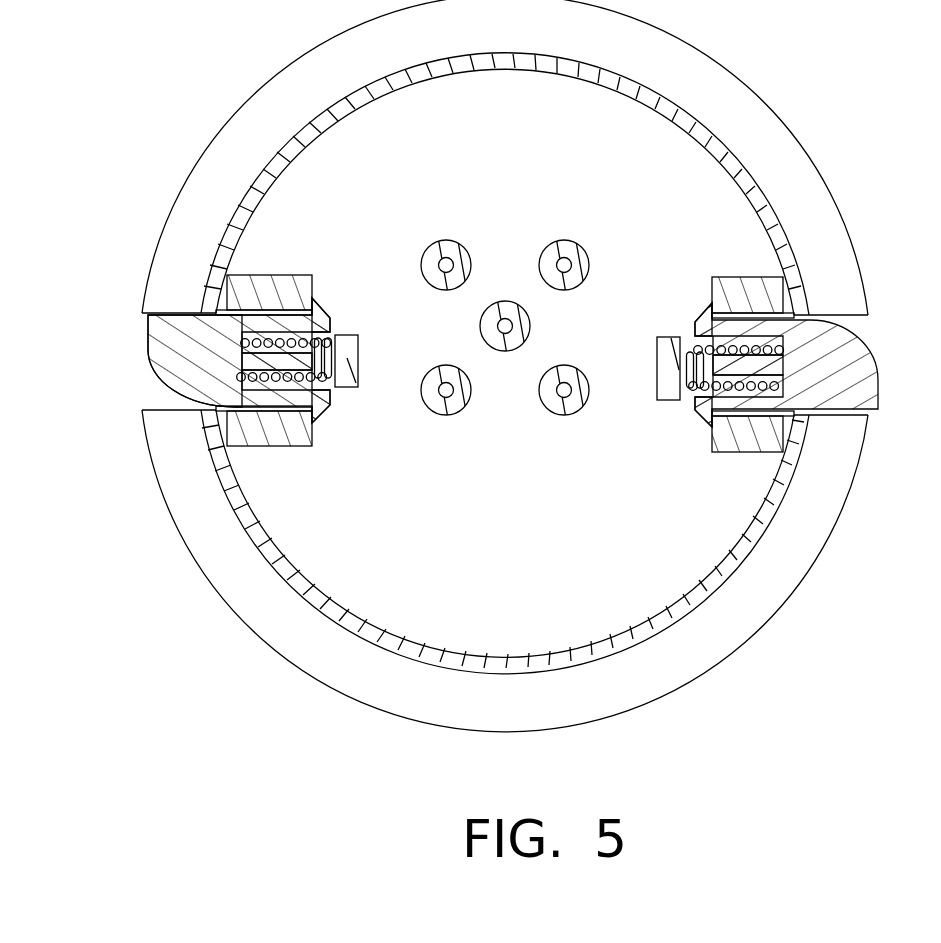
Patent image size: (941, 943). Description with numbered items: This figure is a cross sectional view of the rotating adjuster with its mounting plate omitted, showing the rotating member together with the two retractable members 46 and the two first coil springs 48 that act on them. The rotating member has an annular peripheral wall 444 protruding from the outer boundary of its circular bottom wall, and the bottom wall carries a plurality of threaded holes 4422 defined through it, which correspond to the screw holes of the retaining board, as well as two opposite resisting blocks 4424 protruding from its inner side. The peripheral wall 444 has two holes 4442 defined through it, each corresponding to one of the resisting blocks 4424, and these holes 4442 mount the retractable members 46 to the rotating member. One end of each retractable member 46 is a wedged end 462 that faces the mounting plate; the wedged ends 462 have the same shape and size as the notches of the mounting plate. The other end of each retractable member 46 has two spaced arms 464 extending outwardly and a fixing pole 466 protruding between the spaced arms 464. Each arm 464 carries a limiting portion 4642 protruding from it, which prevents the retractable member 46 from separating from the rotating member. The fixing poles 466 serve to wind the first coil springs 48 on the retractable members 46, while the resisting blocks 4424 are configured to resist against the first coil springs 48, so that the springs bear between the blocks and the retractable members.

The peripheral wall 444 is at (412, 687).
The holes 4442 is at (170, 400).
The threaded holes 4422 is at (578, 250).
The resisting blocks 4424 is at (358, 388).
The retractable member 46 is at (180, 342).
The wedged end 462 is at (148, 343).
The arms 464 is at (255, 323).
The limiting portion 4642 is at (322, 308).
The fixing pole 466 is at (267, 357).
The first coil springs 48 is at (330, 380).